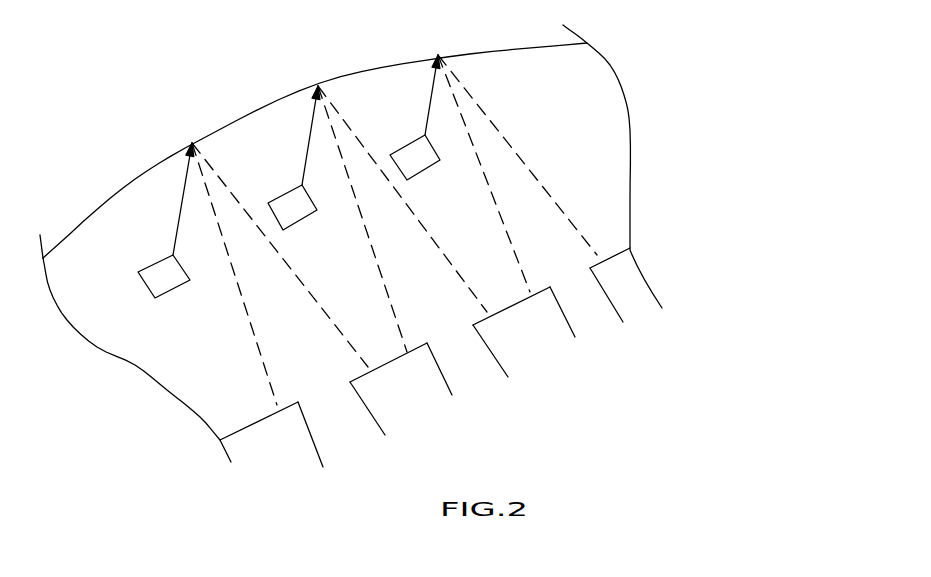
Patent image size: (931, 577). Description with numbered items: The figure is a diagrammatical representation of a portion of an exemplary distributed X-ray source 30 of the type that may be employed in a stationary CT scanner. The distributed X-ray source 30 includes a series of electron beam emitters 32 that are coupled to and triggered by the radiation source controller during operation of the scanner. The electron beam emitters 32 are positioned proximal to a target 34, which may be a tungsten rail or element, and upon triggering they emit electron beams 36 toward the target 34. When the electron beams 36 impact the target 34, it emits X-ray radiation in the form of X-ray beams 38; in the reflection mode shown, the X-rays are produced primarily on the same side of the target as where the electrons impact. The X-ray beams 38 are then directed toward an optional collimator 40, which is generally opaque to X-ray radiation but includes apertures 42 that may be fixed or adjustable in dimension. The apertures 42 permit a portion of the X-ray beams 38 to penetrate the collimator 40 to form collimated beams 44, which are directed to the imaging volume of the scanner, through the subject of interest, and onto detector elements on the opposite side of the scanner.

The distributed X-ray source 30 is at (690, 44).
The electron beam emitters 32 is at (152, 265).
The target 34 is at (120, 190).
The electron beams 36 is at (184, 187).
The X-ray beams 38 is at (259, 350).
The collimator 40 is at (261, 421).
The apertures 42 is at (332, 401).
The collimated beams 44 is at (354, 464).